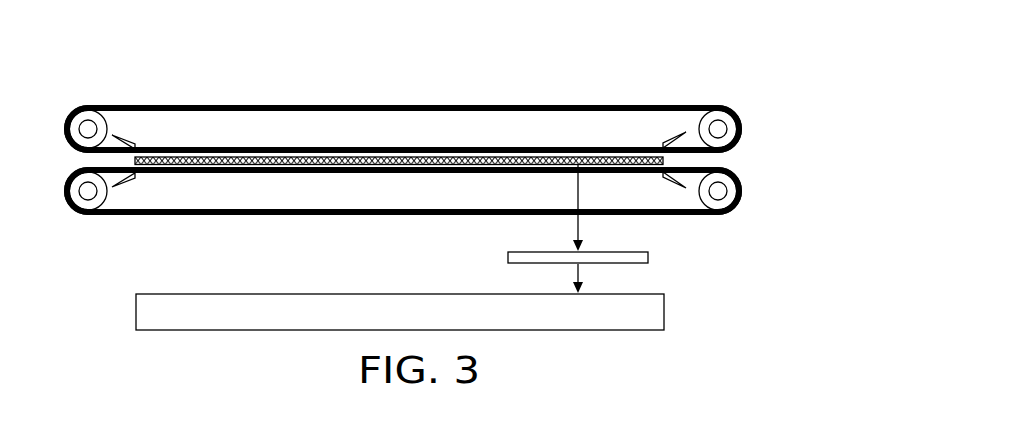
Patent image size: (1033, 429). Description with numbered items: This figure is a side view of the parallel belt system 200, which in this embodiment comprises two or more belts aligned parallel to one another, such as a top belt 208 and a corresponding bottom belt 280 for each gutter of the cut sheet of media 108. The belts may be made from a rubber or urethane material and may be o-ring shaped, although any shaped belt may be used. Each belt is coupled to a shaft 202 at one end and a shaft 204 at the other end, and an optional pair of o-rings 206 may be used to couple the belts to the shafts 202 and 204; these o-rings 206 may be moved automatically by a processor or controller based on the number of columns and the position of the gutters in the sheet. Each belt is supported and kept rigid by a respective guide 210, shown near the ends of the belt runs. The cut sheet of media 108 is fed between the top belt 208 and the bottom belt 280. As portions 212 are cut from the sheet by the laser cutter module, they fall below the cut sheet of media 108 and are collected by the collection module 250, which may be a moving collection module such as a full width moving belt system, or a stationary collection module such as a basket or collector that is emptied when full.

The parallel belt system 200 is at (407, 65).
The cut sheet of media 108 is at (135, 160).
The shaft 202 is at (88, 131).
The shaft 204 is at (718, 130).
The o-rings 206 is at (70, 131).
The top belt 208 is at (343, 104).
The bottom belt 280 is at (380, 216).
The guide 210 is at (272, 104).
The portions 212 is at (508, 257).
The collection module 250 is at (668, 306).